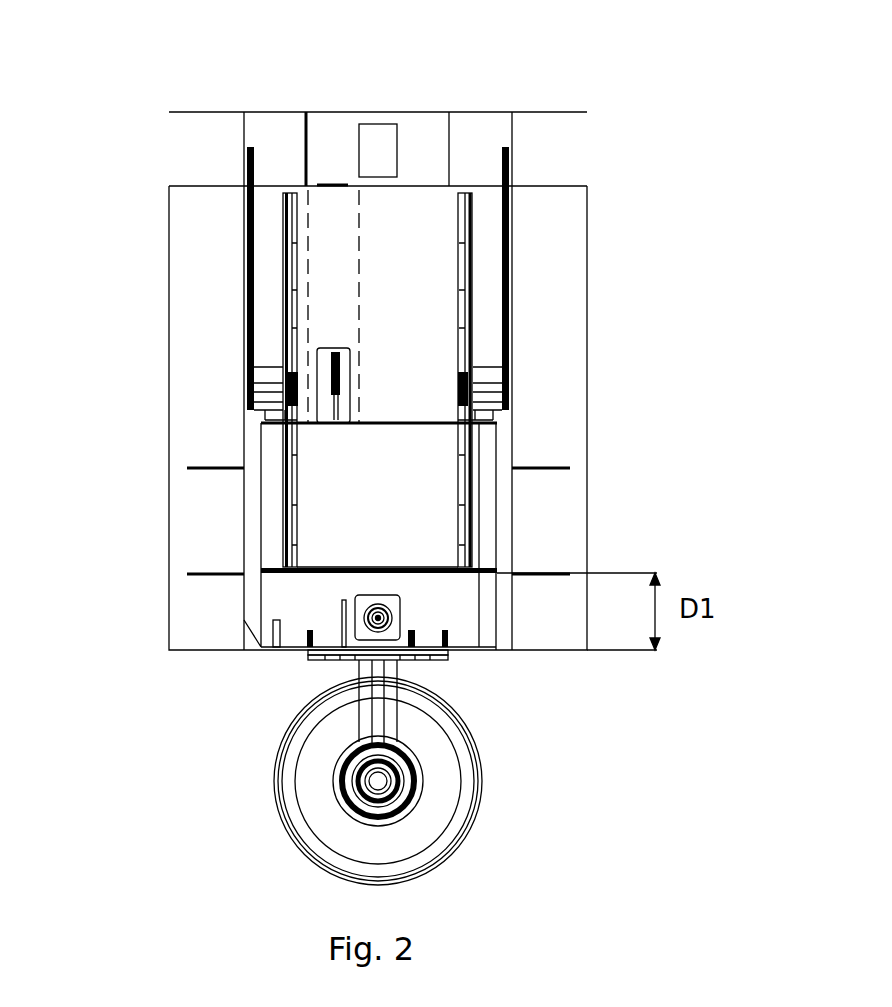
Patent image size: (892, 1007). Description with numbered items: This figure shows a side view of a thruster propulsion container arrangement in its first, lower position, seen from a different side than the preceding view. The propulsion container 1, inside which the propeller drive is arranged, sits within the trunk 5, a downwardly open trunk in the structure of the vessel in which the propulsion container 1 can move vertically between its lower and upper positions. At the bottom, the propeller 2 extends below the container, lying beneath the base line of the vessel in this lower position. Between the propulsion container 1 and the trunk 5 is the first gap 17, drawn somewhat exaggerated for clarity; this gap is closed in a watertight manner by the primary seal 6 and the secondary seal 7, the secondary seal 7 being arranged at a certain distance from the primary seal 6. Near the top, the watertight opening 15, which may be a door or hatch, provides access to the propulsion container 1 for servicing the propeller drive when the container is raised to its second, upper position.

The propulsion container 1 is at (271, 471).
The propeller 2 is at (322, 808).
The trunk 5 is at (510, 438).
The primary seal 6 is at (498, 640).
The secondary seal 7 is at (497, 573).
The opening 15 is at (387, 137).
The first gap 17 is at (250, 528).